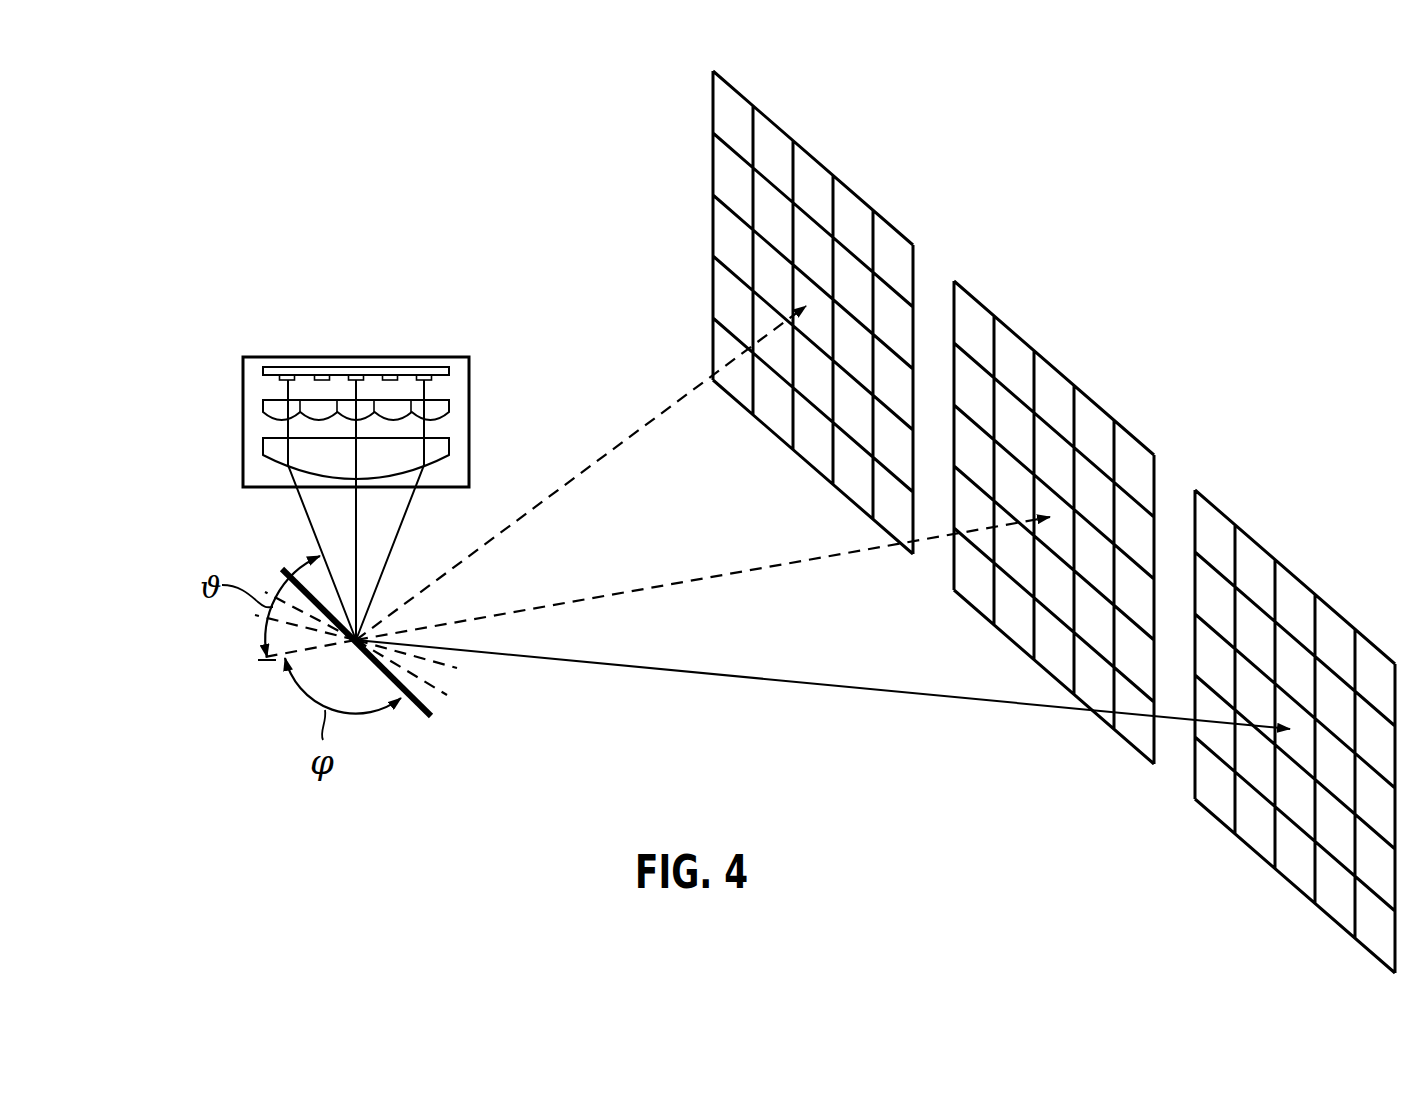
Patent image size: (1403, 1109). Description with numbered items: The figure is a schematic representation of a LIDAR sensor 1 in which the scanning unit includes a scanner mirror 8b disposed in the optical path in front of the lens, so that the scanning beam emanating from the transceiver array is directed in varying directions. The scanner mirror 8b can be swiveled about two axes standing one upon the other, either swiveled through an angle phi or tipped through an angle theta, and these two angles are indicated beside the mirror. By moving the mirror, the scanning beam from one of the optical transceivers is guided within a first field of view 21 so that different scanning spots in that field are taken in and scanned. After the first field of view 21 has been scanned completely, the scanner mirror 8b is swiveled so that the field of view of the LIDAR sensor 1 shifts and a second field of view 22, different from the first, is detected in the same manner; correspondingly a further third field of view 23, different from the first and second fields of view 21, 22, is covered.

The LIDAR sensor 1 is at (185, 289).
The scanner mirror 8b is at (420, 720).
The first field of view 21 is at (1294, 570).
The second field of view 22 is at (1056, 360).
The third field of view 23 is at (818, 158).